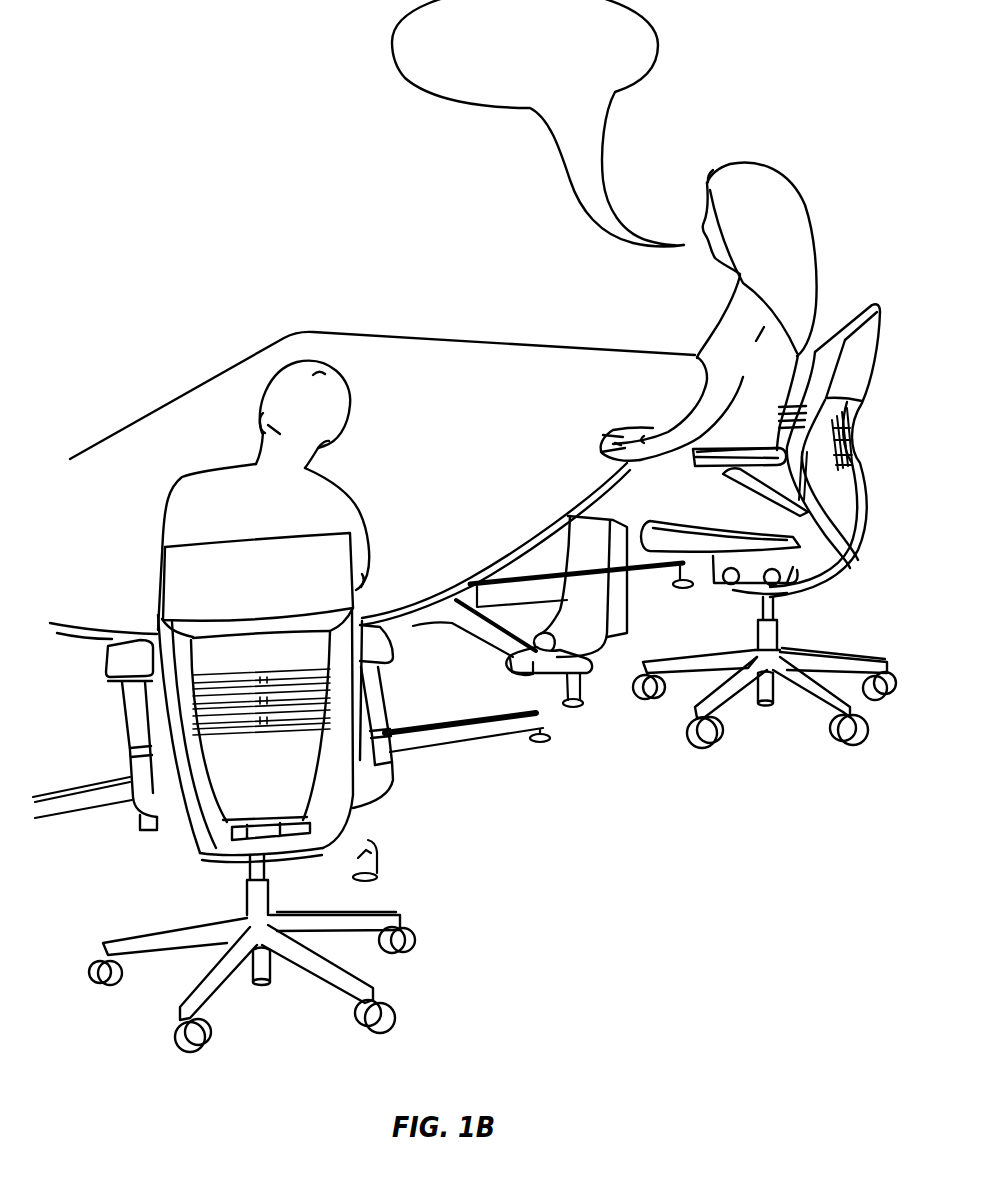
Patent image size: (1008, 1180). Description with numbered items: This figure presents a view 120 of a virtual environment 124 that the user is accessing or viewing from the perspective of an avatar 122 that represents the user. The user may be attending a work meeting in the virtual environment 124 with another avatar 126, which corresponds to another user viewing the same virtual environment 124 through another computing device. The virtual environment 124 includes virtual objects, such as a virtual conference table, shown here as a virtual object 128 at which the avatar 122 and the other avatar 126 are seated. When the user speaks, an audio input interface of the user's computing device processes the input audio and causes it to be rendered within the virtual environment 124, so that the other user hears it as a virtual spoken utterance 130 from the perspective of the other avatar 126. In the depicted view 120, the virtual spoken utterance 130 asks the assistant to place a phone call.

The environment with first and second users 120 is at (141, 143).
The first user 122 is at (784, 250).
The table base / floor structure 124 is at (584, 877).
The second user 126 is at (274, 502).
The table 128 is at (469, 444).
The spoken utterance 130 is at (657, 50).